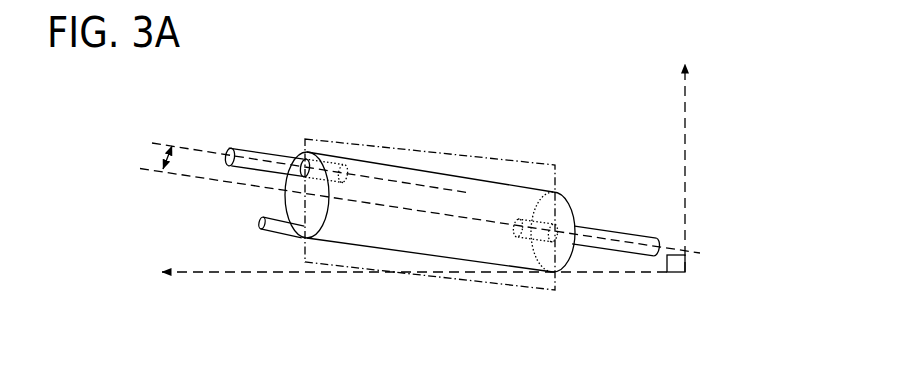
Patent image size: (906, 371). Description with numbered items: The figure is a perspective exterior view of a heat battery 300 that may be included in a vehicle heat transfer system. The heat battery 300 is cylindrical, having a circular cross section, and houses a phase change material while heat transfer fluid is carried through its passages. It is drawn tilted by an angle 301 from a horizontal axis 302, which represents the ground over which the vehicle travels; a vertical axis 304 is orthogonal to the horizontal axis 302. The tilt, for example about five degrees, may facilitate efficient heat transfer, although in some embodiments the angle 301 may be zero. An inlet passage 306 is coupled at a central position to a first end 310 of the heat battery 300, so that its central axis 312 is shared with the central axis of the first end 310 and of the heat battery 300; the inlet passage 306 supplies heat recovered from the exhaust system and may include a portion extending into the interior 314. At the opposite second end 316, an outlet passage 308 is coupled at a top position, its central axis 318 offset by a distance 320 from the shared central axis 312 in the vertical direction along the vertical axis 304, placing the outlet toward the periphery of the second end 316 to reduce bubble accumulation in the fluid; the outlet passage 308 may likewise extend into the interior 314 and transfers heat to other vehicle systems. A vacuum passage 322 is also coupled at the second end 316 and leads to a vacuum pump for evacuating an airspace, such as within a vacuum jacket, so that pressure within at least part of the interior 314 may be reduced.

The heat battery 300 is at (497, 96).
The angle 301 is at (443, 259).
The horizontal axis 302 is at (170, 273).
The vertical axis 304 is at (687, 82).
The inlet passage 306 is at (598, 226).
The outlet passage 308 is at (273, 150).
The first end 310 is at (586, 196).
The central axis 312 is at (218, 181).
The interior 314 is at (444, 190).
The second end 316 is at (260, 202).
The central axis 318 is at (204, 150).
The distance 320 is at (166, 153).
The vacuum passage 322 is at (280, 236).